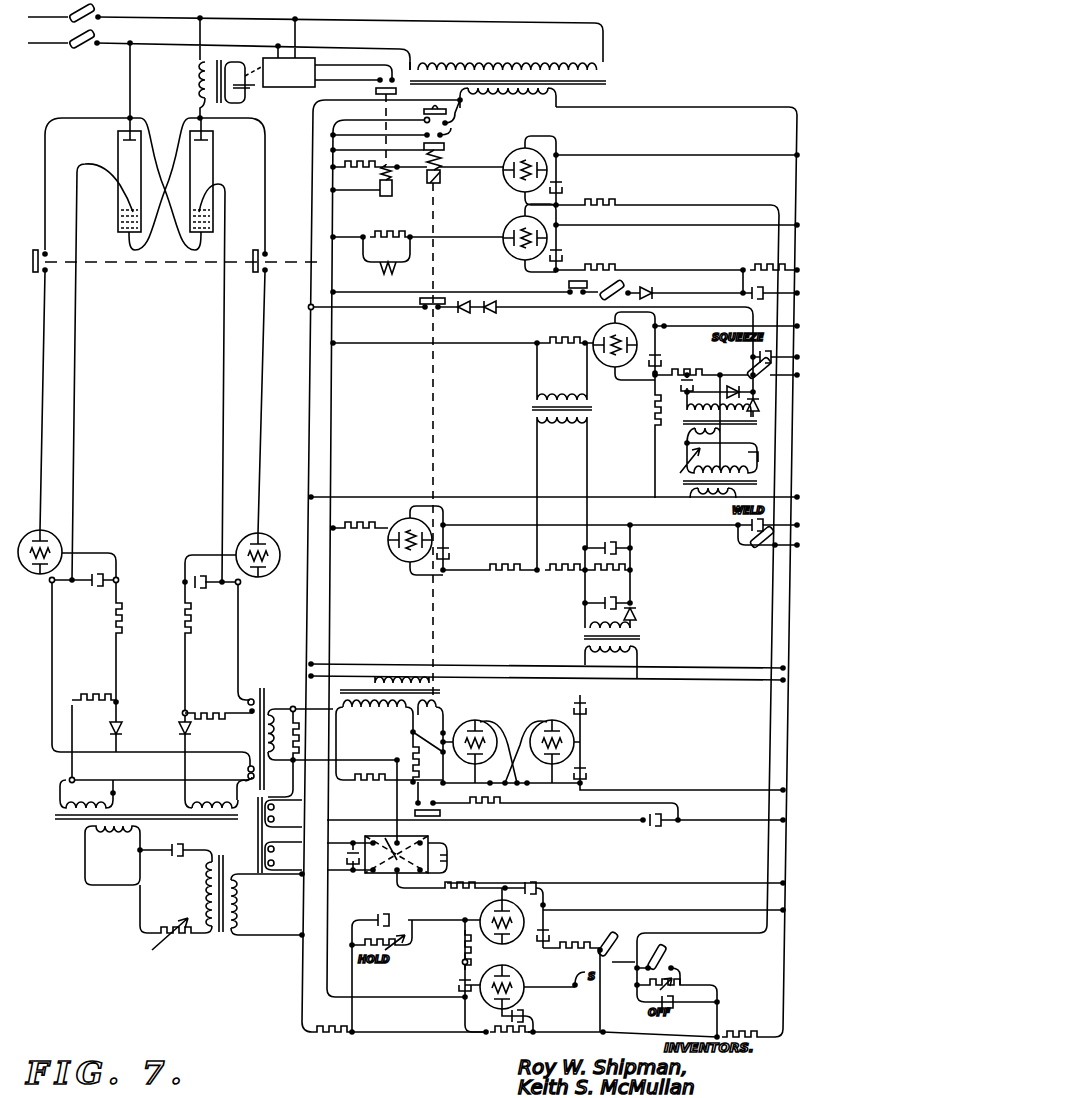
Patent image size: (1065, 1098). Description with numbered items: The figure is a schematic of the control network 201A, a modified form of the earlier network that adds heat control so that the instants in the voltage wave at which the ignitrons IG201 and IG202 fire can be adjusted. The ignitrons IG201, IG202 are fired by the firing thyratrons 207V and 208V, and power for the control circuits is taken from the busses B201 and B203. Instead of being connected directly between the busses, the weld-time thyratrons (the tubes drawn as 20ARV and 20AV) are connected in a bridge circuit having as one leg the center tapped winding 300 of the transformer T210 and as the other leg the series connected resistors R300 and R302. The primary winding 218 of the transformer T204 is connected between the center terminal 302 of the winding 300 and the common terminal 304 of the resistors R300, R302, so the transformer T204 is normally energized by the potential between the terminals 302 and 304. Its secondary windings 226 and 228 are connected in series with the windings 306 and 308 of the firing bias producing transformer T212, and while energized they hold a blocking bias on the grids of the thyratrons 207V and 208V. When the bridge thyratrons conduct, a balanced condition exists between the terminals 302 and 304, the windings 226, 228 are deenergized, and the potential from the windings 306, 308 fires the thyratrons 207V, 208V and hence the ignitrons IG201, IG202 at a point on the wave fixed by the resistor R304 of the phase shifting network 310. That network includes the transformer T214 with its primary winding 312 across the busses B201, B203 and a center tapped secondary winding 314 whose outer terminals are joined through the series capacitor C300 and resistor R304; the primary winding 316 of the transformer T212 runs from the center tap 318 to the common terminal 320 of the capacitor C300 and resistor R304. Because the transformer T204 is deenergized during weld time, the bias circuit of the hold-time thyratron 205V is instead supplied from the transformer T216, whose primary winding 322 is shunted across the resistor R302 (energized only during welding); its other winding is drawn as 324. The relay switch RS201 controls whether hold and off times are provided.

The ignitron IG201 is at (78, 160).
The ignitron IG202 is at (205, 178).
The bus B201 is at (313, 213).
The network 201A is at (635, 92).
The bus B203 is at (797, 140).
The firing thyratron 207V is at (60, 536).
The firing thyratron 208V is at (268, 535).
The transformer T204 is at (262, 690).
The primary winding 218 is at (291, 709).
The secondary winding 228 is at (244, 703).
The secondary winding 226 is at (247, 770).
The winding 306 is at (115, 800).
The winding 308 is at (215, 797).
The firing bias producing transformer T212 is at (75, 828).
The primary winding 316 is at (116, 843).
The common terminal 320 is at (112, 855).
The capacitor C300 is at (186, 848).
The center tapped secondary winding 314 is at (207, 872).
The center tap 318 is at (206, 892).
The primary winding 312 is at (238, 906).
The phase shifting network 310 is at (92, 920).
The resistor R304 is at (163, 940).
The transformer T216 is at (258, 827).
The transformer T214 is at (259, 842).
The primary winding 322 is at (283, 813).
The transformer winding 324 is at (283, 856).
The transformer T210 is at (440, 695).
The center tapped winding 300 is at (375, 710).
The center terminal 302 is at (412, 736).
The common terminal 304 is at (396, 776).
The resistor R300 is at (388, 785).
The resistor R302 is at (412, 812).
The switch RS201 is at (440, 838).
The tube 20ARV is at (455, 716).
The tube 20AV is at (556, 720).
The thyratron 205V is at (486, 900).